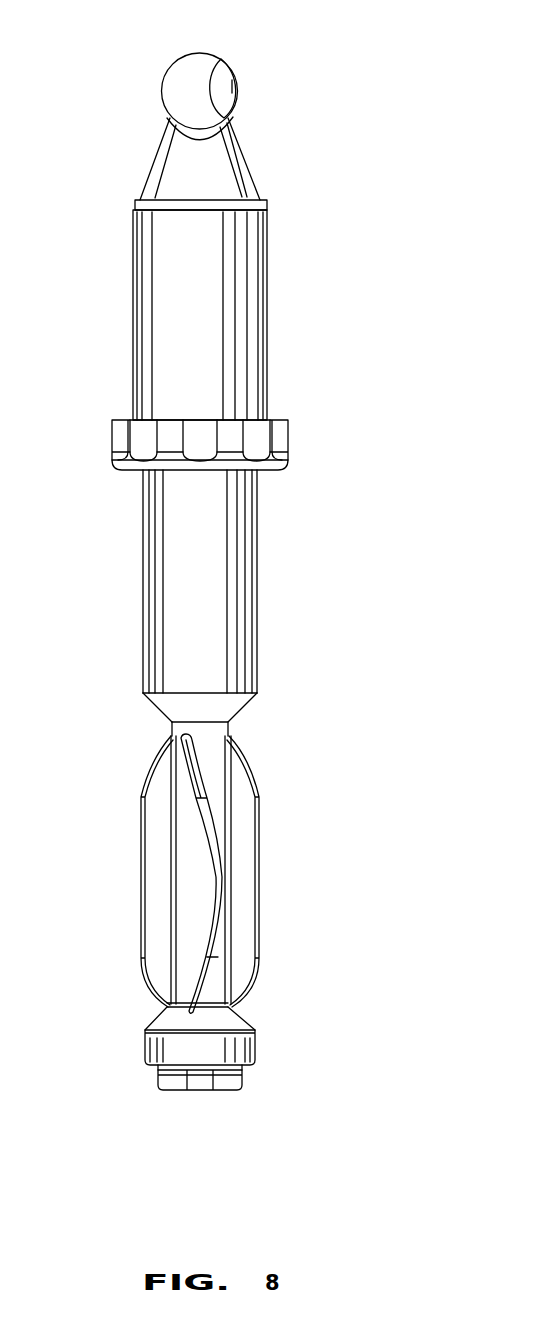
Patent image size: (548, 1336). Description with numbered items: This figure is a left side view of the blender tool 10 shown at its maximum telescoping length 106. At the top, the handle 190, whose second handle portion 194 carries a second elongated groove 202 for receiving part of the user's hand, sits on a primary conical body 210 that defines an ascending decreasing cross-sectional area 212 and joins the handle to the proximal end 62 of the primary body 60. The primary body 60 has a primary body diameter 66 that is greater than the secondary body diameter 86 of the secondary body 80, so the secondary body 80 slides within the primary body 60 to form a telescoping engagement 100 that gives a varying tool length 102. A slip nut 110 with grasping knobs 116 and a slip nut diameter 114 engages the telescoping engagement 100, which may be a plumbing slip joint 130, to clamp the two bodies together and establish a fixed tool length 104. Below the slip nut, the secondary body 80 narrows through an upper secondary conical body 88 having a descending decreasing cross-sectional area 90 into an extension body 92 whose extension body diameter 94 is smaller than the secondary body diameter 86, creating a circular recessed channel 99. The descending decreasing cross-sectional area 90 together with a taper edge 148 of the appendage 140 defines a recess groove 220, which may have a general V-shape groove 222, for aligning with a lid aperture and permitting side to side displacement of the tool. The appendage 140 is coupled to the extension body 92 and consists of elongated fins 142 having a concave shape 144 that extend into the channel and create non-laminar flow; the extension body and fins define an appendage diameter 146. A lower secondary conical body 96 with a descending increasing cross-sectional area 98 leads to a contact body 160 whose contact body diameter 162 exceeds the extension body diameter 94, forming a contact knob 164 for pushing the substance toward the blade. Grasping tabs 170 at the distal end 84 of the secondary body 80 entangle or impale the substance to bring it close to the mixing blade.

The blender tool 10 is at (216, 68).
The handle 190 is at (203, 51).
The second handle portion 194 is at (187, 90).
The second elongated groove 202 is at (222, 88).
The primary conical body 210 is at (237, 143).
The ascending decreasing cross-sectional area 212 is at (162, 150).
The proximal end 62 is at (133, 208).
The primary body 60 is at (268, 290).
The fixed tool length 104 is at (133, 252).
The primary body diameter 66 is at (133, 307).
The slip nut 110 is at (168, 432).
The grasping knobs 116 is at (143, 433).
The slip nut diameter 114 is at (235, 433).
The plumbing slip joint 130 is at (272, 468).
The telescoping engagement 100 is at (143, 473).
The maximum telescoping length 106 is at (143, 560).
The secondary body diameter 86 is at (257, 567).
The secondary body 80 is at (143, 606).
The varying tool length 102 is at (257, 640).
The upper secondary conical body 88 is at (150, 708).
The descending decreasing cross-sectional area 90 is at (250, 713).
The circular recessed channel 99 is at (169, 723).
The general V-shape groove 222 is at (250, 722).
The recess groove 220 is at (170, 738).
The taper edge 148 is at (258, 773).
The extension body 92 is at (183, 798).
The extension body diameter 94 is at (187, 842).
The appendage diameter 146 is at (258, 847).
The elongated fins 142 is at (140, 895).
The concave shape 144 is at (213, 910).
The appendage 140 is at (140, 933).
The lower secondary conical body 96 is at (163, 1018).
The descending increasing cross-sectional area 98 is at (242, 1017).
The contact body 160 is at (145, 1040).
The contact knob 164 is at (253, 1052).
The contact body diameter 162 is at (145, 1057).
The distal end 84 is at (253, 1057).
The grasping tabs 170 is at (175, 1077).